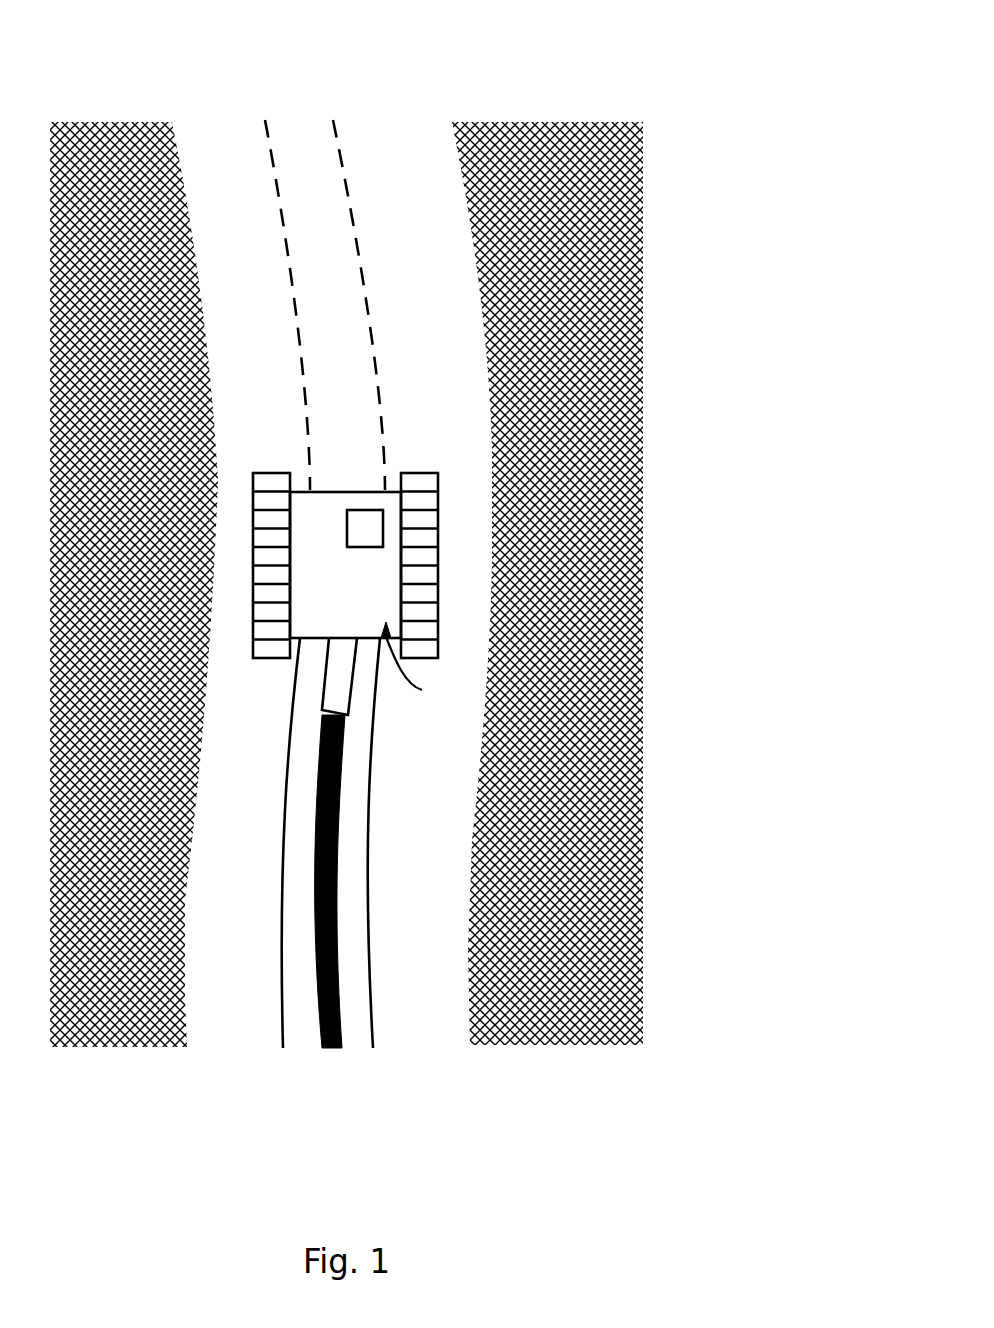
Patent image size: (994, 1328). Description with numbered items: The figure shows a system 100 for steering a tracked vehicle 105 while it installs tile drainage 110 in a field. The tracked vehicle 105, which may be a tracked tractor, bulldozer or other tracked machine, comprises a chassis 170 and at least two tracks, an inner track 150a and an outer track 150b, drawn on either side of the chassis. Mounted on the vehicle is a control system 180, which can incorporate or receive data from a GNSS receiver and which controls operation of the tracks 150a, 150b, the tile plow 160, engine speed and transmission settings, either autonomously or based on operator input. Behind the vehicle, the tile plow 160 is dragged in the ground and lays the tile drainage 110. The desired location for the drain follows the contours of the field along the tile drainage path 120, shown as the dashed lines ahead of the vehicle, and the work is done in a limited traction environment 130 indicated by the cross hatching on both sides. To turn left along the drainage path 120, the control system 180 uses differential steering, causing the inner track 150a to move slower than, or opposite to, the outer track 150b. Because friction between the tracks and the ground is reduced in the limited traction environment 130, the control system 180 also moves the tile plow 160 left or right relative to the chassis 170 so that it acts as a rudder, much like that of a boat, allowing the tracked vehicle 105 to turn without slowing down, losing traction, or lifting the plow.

The system 100 is at (713, 83).
The tracked vehicle 105 is at (345, 490).
The tile drainage 110 is at (330, 1050).
The tile drainage path 120 is at (365, 278).
The limited traction environment 130 is at (643, 303).
The inner track 150a is at (268, 473).
The outer track 150b is at (417, 473).
The tile plow 160 is at (322, 680).
The chassis 170 is at (418, 662).
The control system 180 is at (342, 530).